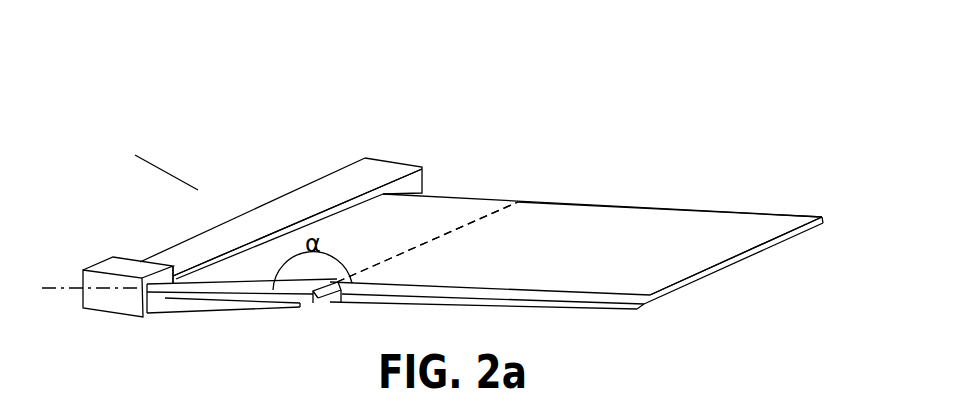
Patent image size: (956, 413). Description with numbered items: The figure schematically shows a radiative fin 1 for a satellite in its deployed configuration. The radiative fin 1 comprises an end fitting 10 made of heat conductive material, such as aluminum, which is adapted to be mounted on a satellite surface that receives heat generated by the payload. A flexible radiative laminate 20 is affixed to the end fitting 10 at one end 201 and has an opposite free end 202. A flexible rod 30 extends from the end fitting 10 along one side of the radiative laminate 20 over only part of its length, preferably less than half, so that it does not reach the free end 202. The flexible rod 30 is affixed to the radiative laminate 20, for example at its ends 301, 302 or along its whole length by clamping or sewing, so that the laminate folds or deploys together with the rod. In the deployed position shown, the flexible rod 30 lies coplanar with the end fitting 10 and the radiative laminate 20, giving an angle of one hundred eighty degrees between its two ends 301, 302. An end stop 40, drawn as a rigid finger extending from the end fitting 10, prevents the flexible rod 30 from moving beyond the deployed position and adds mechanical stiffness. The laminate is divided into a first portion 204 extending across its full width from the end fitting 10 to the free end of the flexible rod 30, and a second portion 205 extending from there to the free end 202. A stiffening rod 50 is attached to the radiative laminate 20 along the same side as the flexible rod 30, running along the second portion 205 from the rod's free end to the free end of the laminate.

The radiative fin 1 is at (186, 183).
The end fitting 10 is at (248, 217).
The flexible radiative laminate 20 is at (672, 226).
The end of the radiative laminate 201 is at (308, 225).
The free end of the radiative laminate 202 is at (742, 258).
The first portion of the radiative laminate 204 is at (413, 228).
The second portion of the radiative laminate 205 is at (605, 243).
The flexible rod 30 is at (260, 297).
The end of the flexible rod 301 is at (173, 275).
The free end of the flexible rod 302 is at (311, 302).
The end stop 40 is at (167, 302).
The stiffening rod 50 is at (597, 308).